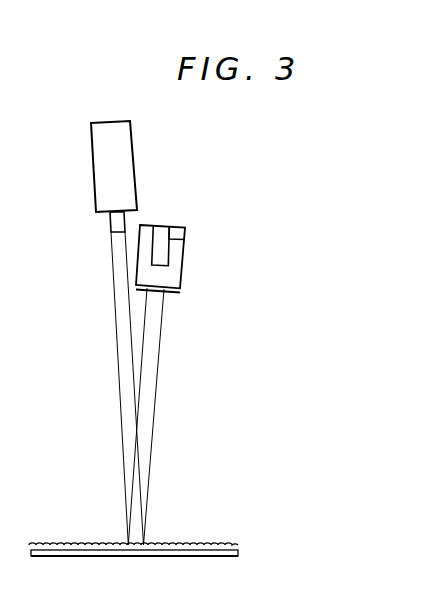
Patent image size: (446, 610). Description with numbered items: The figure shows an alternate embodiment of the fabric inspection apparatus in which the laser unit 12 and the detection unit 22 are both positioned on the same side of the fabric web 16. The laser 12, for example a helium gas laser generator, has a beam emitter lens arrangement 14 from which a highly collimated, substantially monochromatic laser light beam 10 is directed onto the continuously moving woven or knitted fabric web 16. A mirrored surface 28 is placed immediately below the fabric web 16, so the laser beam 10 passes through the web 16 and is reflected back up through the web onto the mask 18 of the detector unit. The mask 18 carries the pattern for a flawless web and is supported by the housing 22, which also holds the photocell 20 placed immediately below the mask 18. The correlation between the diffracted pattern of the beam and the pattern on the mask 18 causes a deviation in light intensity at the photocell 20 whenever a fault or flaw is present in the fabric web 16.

The laser light beam 10 is at (118, 367).
The laser 12 is at (132, 148).
The beam emitter lens arrangement 14 is at (122, 218).
The fabric web 16 is at (205, 545).
The mask 18 is at (178, 292).
The photocell 20 is at (185, 237).
The housing 22 is at (185, 261).
The mirrored surface 28 is at (238, 557).